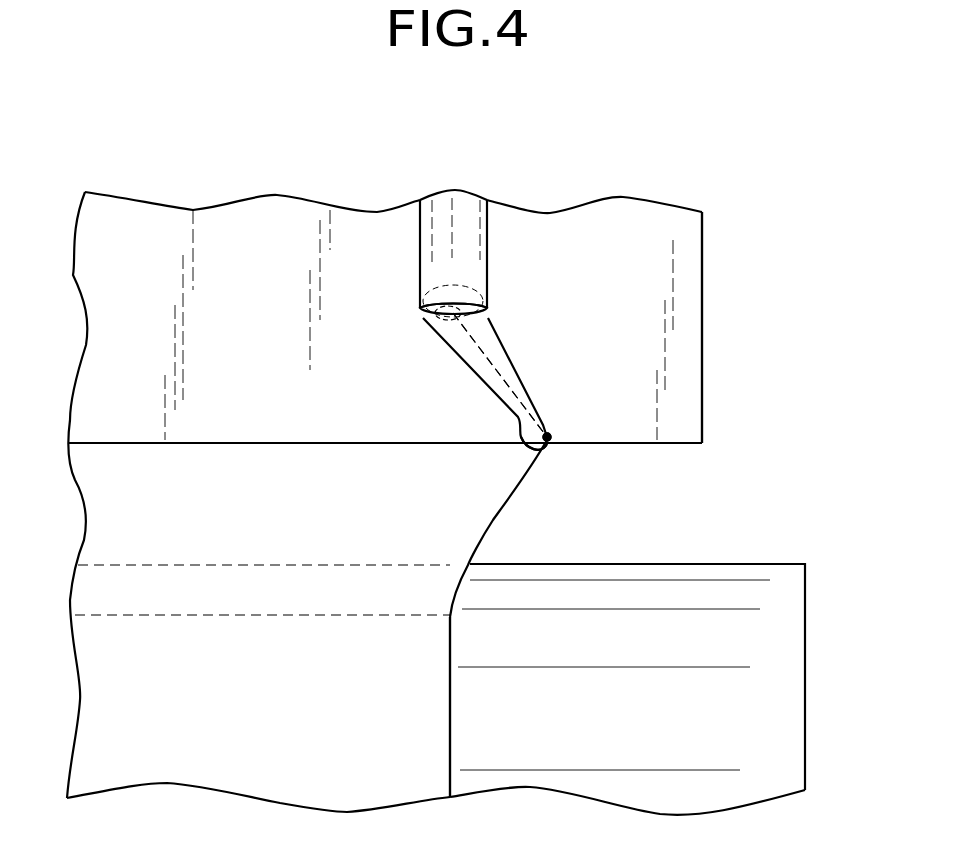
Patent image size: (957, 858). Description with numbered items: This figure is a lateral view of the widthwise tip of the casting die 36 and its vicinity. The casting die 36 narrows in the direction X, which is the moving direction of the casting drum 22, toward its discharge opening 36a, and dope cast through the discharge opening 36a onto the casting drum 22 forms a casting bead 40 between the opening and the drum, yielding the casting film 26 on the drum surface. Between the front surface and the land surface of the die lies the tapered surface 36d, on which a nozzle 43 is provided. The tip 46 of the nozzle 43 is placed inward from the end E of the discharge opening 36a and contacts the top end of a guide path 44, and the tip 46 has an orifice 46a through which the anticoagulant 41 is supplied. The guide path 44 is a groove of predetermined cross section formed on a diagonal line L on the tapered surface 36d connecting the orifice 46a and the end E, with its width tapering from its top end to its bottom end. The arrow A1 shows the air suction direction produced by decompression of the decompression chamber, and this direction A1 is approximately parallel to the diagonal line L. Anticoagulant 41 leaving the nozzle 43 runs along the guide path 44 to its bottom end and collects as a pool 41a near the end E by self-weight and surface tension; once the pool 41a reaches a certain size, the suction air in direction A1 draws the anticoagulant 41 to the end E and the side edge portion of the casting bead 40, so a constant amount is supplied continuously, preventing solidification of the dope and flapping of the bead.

The casting drum 22 is at (747, 563).
The casting film 26 is at (423, 720).
The casting die 36 is at (723, 298).
The discharge opening 36a is at (273, 443).
The tapered surface 36d is at (693, 392).
The casting bead 40 is at (478, 523).
The anticoagulant 41 is at (502, 348).
The pool 41a is at (551, 447).
The nozzle 43 is at (465, 199).
The guide path 44 is at (557, 353).
The tip 46 is at (419, 316).
The orifice 46a is at (448, 310).
The air suction direction A1 is at (383, 343).
The end of the discharge opening E is at (548, 436).
The diagonal line L is at (493, 392).
The direction X is at (842, 753).